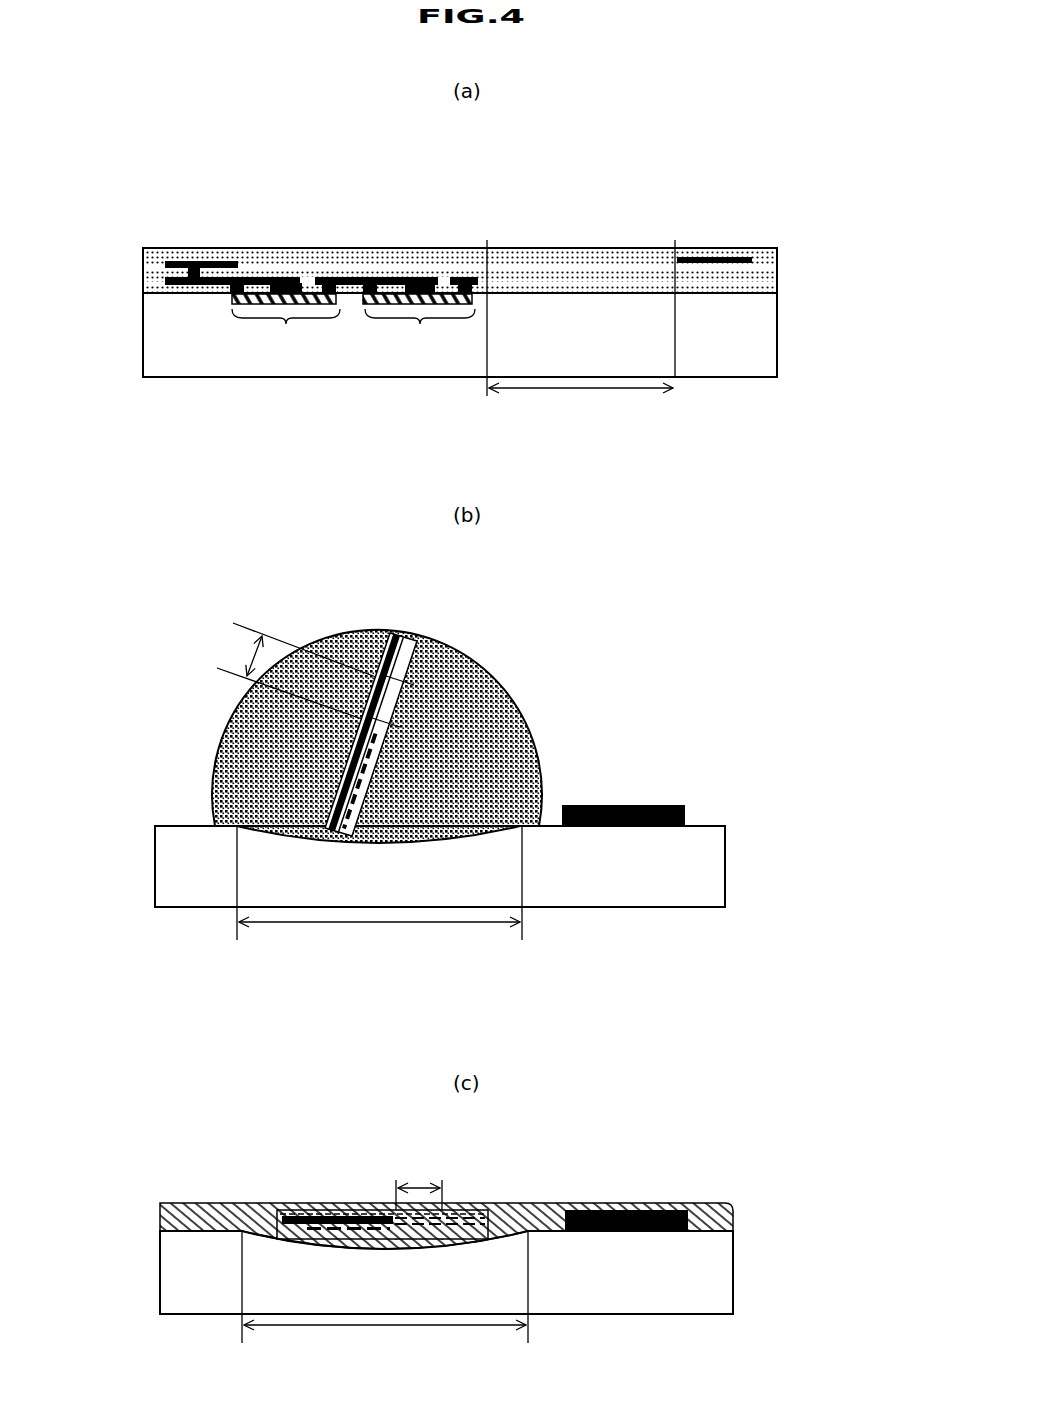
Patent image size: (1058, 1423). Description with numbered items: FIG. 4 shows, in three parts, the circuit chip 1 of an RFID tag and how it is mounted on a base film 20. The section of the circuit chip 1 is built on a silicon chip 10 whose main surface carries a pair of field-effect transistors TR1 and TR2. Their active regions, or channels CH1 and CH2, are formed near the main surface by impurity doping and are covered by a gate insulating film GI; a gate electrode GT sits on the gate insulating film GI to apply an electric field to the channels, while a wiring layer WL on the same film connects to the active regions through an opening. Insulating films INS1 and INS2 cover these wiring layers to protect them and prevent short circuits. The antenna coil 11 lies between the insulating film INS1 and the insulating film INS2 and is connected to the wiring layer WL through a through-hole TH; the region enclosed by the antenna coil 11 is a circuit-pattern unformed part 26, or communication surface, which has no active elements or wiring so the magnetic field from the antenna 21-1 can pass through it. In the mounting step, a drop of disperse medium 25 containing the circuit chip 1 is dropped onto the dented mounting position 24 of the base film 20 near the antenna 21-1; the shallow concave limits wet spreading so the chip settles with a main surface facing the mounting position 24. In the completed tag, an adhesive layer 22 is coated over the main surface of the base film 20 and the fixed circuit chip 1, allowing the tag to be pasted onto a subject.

The circuit chip 1 is at (668, 183).
The silicon chip 10 is at (460, 312).
The antenna coil 11 is at (200, 265).
The base film 20 is at (705, 862).
The antenna 21-1 is at (638, 805).
The adhesive layer 22 is at (232, 1205).
The mounting position 24 is at (382, 1091).
The disperse medium 25 is at (233, 775).
The circuit-pattern unformed part 26 is at (445, 740).
The through-hole TH is at (143, 270).
The wiring layer WL is at (180, 288).
The gate electrode GT is at (278, 283).
The first insulating film INS1 is at (777, 272).
The second insulating film INS2 is at (520, 256).
The gate insulating film GI is at (777, 288).
The first active region CH1 is at (232, 297).
The second active region CH2 is at (365, 297).
The first field-effect transistor TR1 is at (286, 332).
The second field-effect transistor TR2 is at (420, 332).